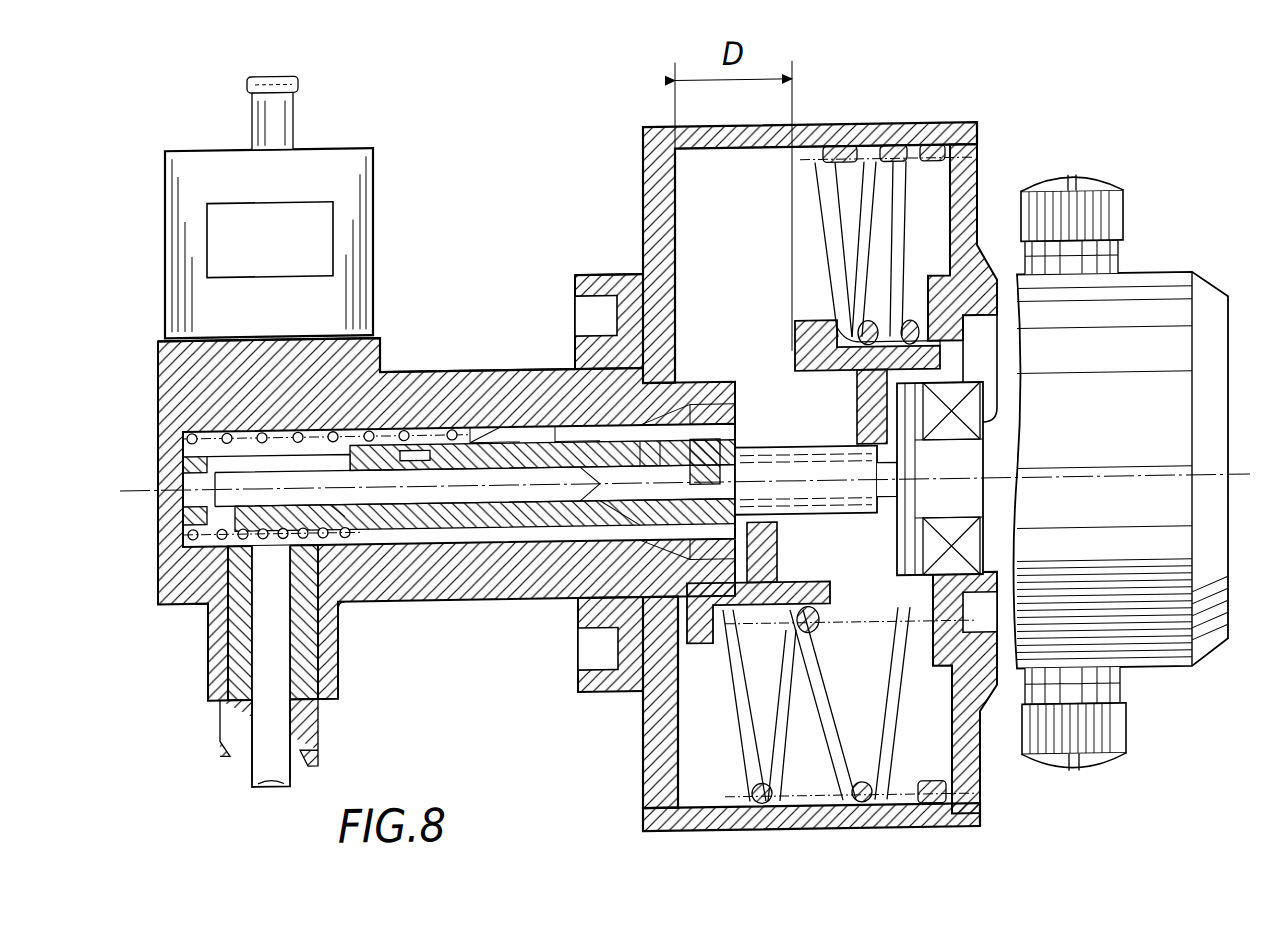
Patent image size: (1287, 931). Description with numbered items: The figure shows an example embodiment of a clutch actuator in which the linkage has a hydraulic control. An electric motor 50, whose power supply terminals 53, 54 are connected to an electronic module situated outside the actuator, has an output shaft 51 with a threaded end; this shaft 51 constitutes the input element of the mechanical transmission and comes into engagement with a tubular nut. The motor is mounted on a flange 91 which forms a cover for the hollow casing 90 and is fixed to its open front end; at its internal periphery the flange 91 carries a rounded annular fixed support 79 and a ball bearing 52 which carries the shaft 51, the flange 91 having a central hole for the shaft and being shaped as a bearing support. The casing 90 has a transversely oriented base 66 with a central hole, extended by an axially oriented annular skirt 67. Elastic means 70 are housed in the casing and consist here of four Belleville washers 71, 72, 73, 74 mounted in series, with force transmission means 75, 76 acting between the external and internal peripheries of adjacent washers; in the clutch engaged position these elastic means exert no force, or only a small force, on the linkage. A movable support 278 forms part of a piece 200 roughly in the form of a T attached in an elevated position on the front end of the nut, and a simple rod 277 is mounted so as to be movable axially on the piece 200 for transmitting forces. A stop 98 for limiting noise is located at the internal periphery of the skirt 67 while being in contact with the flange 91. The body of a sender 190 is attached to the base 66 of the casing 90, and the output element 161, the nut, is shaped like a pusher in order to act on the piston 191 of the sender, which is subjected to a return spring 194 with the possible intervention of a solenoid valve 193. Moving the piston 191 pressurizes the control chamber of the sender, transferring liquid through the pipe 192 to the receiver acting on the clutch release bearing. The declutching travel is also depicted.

The electric motor 50 is at (1150, 270).
The shaft 51 is at (782, 470).
The ball bearing 52 is at (965, 412).
The power supply terminal 53 is at (1098, 184).
The power supply terminal 54 is at (1122, 764).
The base 66 is at (648, 745).
The skirt 67 is at (690, 833).
The elastic means 70 is at (735, 728).
The Belleville washer 71 is at (738, 762).
The Belleville washer 72 is at (858, 218).
The Belleville washer 73 is at (905, 810).
The Belleville washer 74 is at (915, 215).
The force transmission means 75 is at (843, 215).
The force transmission means 76 is at (898, 228).
The fixed support 79 is at (905, 680).
The casing 90 is at (643, 170).
The flange 91 is at (991, 138).
The stop 98 is at (955, 790).
The output element 161 is at (603, 597).
The sender 190 is at (452, 348).
The piston 191 is at (412, 520).
The pipe 192 is at (293, 778).
The solenoid valve 193 is at (372, 188).
The return spring 194 is at (410, 428).
The piece 200 is at (795, 345).
The rod 277 is at (812, 800).
The movable support 278 is at (790, 338).